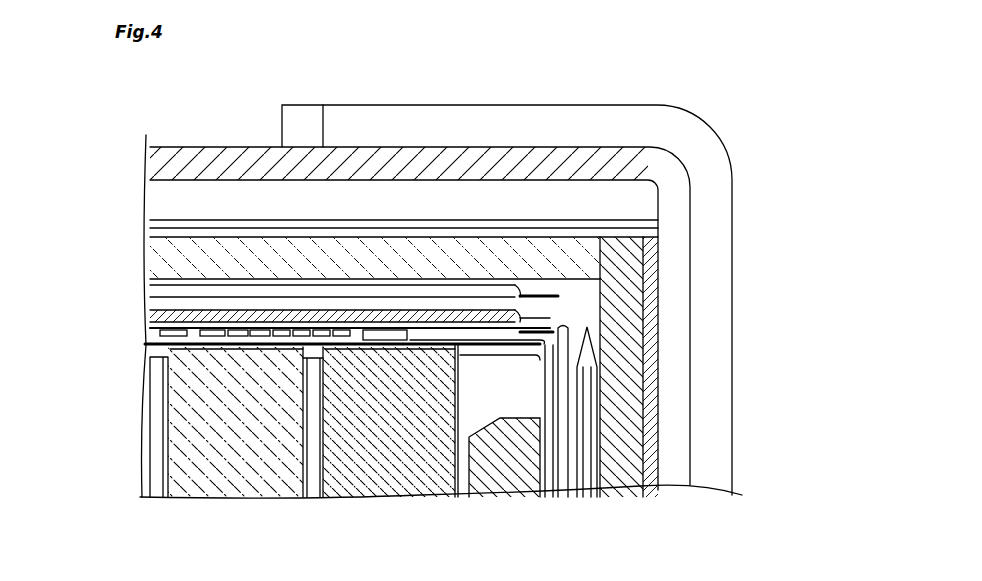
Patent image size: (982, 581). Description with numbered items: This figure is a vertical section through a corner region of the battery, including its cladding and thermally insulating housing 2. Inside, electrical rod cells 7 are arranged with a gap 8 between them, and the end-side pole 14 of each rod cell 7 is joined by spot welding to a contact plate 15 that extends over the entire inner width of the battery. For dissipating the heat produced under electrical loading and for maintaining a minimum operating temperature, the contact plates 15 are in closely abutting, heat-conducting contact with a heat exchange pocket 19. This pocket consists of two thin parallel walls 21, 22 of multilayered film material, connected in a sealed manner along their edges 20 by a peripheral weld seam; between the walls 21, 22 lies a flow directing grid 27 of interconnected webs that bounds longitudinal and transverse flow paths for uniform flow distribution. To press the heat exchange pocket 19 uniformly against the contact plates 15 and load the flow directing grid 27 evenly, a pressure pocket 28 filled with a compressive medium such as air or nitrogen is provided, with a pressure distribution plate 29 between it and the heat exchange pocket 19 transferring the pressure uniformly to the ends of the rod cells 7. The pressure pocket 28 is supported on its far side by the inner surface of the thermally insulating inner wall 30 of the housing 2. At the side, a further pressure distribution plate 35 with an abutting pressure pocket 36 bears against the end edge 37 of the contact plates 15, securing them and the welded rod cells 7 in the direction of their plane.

The housing 2 is at (685, 185).
The rod cells 7 is at (230, 478).
The gap 8 is at (315, 488).
The end-side pole 14 is at (238, 346).
The contact plates 15 is at (548, 337).
The heat exchange pocket 19 is at (185, 337).
The edges 20 is at (555, 335).
The wall 21 is at (363, 328).
The wall 22 is at (470, 343).
The flow directing grid 27 is at (310, 330).
The pressure pocket 28 is at (162, 297).
The pressure distribution plate 29 is at (257, 323).
The thermally insulating inner wall 30 is at (160, 261).
The further pressure distribution plate 35 is at (563, 373).
The pressure pocket 36 is at (592, 488).
The end edge 37 is at (565, 342).